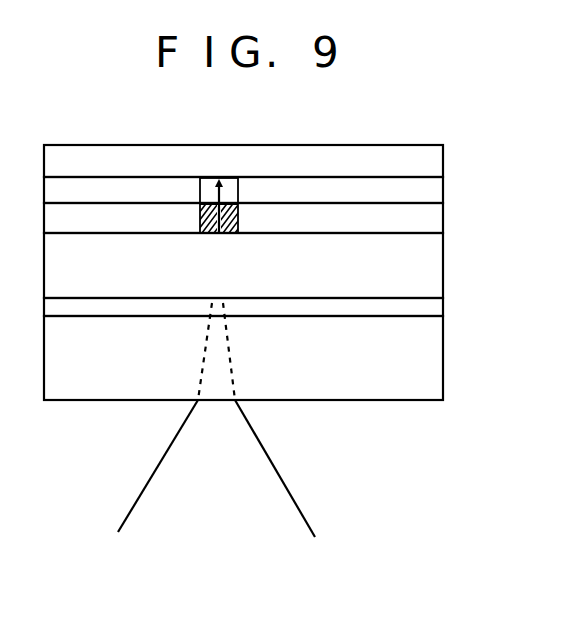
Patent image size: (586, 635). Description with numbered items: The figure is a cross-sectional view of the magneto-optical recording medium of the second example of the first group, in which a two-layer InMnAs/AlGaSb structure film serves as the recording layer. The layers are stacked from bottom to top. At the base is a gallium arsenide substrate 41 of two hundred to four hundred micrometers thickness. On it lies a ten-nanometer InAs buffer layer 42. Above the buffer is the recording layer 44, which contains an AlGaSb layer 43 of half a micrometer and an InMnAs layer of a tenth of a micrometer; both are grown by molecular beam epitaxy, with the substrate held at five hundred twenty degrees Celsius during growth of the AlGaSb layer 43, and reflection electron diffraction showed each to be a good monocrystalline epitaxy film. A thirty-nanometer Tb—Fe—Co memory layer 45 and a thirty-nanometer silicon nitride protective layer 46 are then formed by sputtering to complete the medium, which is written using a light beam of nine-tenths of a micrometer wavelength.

The GaAs 100 substrate 41 is at (447, 373).
The InAs buffer layer 42 is at (447, 310).
The AlGaSb layer 43 is at (447, 264).
The recording layer 44 is at (447, 216).
The Tb—Fe—Co memory layer 45 is at (447, 187).
The Si3N4 protective layer 46 is at (447, 157).